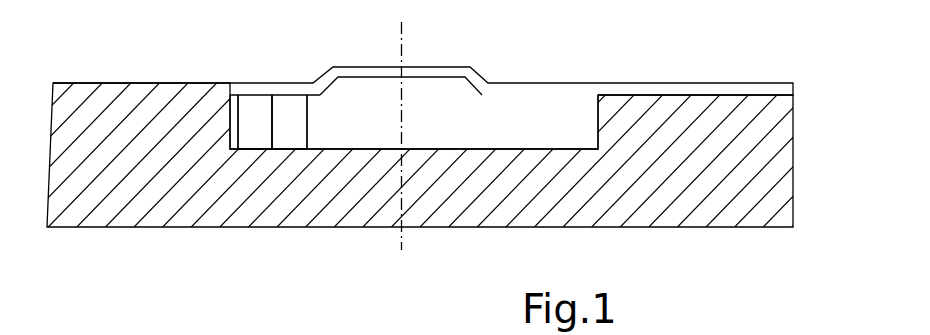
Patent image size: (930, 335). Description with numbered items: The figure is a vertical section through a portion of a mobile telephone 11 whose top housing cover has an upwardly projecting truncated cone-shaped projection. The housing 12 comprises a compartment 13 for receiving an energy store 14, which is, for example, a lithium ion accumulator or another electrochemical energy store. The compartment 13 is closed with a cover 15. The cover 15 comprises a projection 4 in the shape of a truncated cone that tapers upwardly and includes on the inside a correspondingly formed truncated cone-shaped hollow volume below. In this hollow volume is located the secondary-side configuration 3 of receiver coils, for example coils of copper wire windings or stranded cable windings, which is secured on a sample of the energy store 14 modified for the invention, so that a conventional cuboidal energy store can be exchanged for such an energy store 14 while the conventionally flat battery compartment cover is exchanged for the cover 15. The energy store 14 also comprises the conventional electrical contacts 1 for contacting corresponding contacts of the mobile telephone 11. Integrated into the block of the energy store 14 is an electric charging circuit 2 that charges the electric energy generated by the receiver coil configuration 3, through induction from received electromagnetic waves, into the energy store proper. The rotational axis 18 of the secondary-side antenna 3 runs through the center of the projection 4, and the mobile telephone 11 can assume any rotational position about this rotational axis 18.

The electrical contacts 1 is at (263, 137).
The electric charging circuit 2 is at (295, 137).
The secondary-side configuration of receiver coils 3 is at (420, 88).
The projection 4 is at (485, 76).
The mobile telephone 11 is at (378, 230).
The housing 12 is at (145, 83).
The compartment 13 is at (270, 93).
The energy store 14 is at (580, 112).
The cover 15 is at (793, 84).
The rotational axis 18 is at (403, 43).